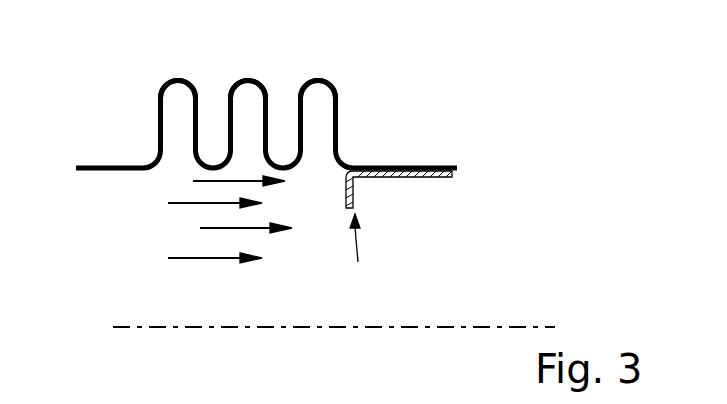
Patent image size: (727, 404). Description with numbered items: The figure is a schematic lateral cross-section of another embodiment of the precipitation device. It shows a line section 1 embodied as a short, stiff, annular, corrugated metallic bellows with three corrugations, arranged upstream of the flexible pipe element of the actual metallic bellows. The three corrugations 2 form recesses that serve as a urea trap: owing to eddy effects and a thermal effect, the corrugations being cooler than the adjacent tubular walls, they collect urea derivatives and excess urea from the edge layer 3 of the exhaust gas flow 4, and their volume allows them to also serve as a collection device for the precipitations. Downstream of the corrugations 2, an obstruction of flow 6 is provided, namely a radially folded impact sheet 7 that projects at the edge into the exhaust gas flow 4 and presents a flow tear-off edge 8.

The line section 1 is at (109, 165).
The corrugations 2 is at (316, 91).
The edge layer 3 is at (206, 181).
The exhaust gas flow 4 is at (195, 258).
The obstruction of flow 6 is at (438, 178).
The impact sheet 7 is at (353, 195).
The flow tear-off edge 8 is at (360, 253).